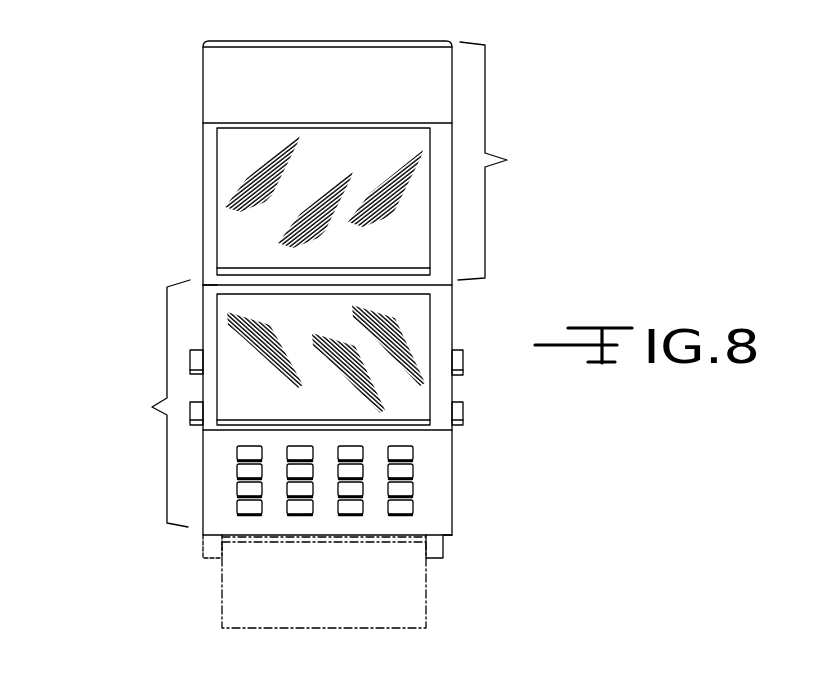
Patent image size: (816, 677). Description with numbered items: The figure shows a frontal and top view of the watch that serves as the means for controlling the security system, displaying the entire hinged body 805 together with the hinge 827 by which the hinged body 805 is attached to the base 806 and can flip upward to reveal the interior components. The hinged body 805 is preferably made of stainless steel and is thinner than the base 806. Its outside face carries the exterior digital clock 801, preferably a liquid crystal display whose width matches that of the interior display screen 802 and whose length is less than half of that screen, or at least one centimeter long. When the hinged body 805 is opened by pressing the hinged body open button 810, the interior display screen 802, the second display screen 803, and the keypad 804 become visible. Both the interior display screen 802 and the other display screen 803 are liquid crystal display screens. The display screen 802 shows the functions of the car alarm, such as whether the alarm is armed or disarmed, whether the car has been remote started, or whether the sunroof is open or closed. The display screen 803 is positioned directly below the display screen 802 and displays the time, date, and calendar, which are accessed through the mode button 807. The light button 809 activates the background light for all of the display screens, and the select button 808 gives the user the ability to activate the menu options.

The exterior digital clock 801 is at (203, 80).
The interior display screen 802 is at (403, 208).
The interior display screen 803 is at (410, 323).
The keypad 804 is at (433, 492).
The hinged body 805 is at (507, 160).
The base 806 is at (152, 407).
The mode button 807 is at (190, 360).
The select button 808 is at (193, 422).
The light 809 is at (464, 357).
The hinged body open button 810 is at (464, 413).
The hinge 827 is at (200, 283).